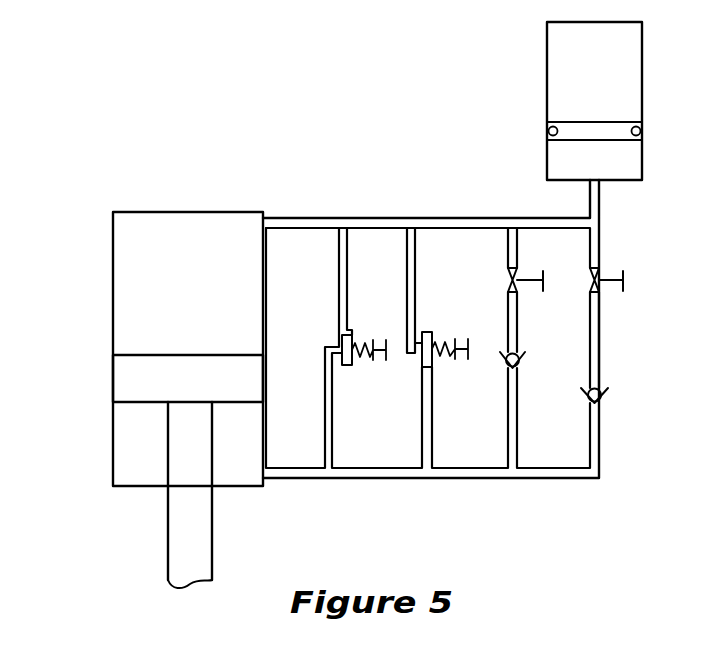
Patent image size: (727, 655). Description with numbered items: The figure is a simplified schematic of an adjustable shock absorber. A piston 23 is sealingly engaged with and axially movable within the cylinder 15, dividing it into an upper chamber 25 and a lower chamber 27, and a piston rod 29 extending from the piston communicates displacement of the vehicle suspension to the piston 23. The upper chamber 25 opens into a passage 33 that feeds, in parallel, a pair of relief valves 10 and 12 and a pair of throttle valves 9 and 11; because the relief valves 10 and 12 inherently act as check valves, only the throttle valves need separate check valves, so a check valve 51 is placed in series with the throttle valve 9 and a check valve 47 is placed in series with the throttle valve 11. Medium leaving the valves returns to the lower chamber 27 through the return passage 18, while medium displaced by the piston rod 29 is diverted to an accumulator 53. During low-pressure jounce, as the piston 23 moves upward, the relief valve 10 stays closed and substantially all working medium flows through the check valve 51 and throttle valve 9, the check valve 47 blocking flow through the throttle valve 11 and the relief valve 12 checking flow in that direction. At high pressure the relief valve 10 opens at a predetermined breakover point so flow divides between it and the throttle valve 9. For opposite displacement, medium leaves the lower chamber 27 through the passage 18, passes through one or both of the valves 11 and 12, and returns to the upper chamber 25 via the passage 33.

The inner cylinder 15 is at (113, 235).
The upper chamber 25 is at (195, 268).
The piston 23 is at (130, 377).
The lower chamber 27 is at (158, 452).
The piston rod 29 is at (177, 537).
The return passage 18 is at (313, 480).
The passage 33 is at (332, 217).
The relief valve 12 is at (345, 367).
The relief valve 10 is at (430, 367).
The throttle valve 11 is at (515, 282).
The throttle valve 9 is at (597, 283).
The check valve 47 is at (510, 347).
The check valve 51 is at (600, 407).
The accumulator 53 is at (519, 86).